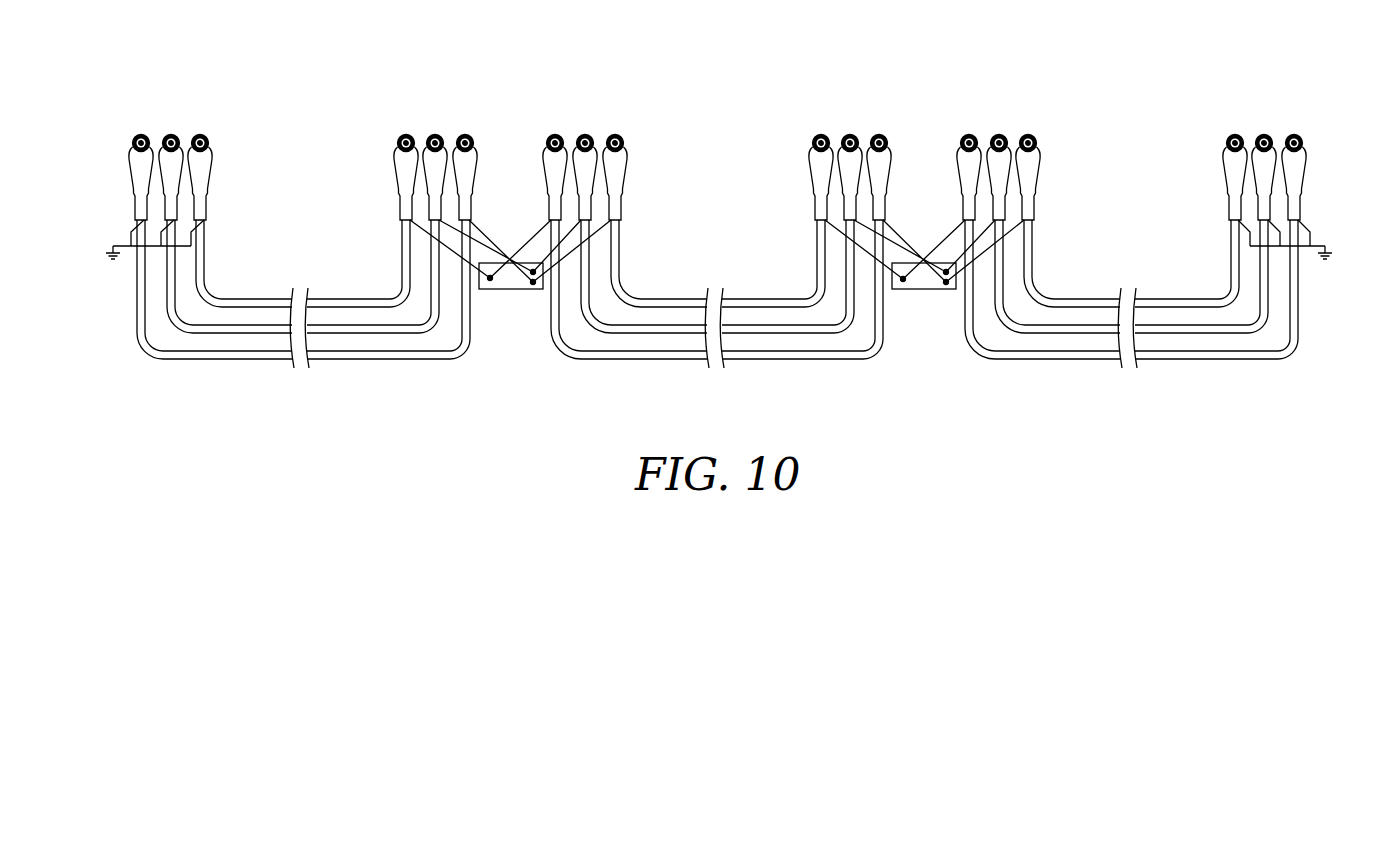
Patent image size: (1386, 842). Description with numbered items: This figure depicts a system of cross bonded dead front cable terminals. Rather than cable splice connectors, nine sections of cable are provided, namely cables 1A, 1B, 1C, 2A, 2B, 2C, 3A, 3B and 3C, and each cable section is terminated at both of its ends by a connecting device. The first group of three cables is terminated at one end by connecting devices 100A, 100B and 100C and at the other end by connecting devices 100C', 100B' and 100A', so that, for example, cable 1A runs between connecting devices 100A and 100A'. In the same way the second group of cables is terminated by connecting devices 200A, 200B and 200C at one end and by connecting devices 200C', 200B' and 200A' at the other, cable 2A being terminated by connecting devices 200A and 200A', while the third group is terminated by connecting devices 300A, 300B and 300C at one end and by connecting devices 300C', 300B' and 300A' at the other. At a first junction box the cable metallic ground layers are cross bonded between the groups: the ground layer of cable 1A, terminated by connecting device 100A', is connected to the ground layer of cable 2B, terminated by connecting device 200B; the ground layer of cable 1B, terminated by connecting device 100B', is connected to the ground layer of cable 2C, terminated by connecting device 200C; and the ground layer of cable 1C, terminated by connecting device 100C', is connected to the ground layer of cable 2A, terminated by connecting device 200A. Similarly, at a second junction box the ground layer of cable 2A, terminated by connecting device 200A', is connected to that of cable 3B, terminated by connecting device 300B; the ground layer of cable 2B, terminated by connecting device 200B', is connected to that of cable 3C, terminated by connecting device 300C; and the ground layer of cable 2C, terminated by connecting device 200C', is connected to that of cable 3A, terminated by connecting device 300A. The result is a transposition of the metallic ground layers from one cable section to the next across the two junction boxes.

The connecting device 100A is at (107, 156).
The connecting device 100B is at (167, 146).
The connecting device 100C is at (232, 156).
The connecting device 100C' is at (372, 156).
The connecting device 100B' is at (432, 146).
The connecting device 100A' is at (498, 149).
The connecting device 200A is at (526, 164).
The connecting device 200B is at (589, 145).
The connecting device 200C is at (645, 157).
The connecting device 200C' is at (789, 156).
The connecting device 200B' is at (848, 146).
The connecting device 200A' is at (915, 149).
The connecting device 300A is at (941, 164).
The connecting device 300B is at (1004, 146).
The connecting device 300C is at (1060, 156).
The connecting device 300C' is at (1201, 157).
The connecting device 300B' is at (1260, 146).
The connecting device 300A' is at (1327, 157).
The cable 1A is at (153, 359).
The cable 1B is at (210, 333).
The cable 1C is at (262, 307).
The cable 2A is at (568, 359).
The cable 2B is at (622, 333).
The cable 2C is at (676, 307).
The cable 3A is at (981, 359).
The cable 3B is at (1037, 333).
The cable 3C is at (1089, 307).